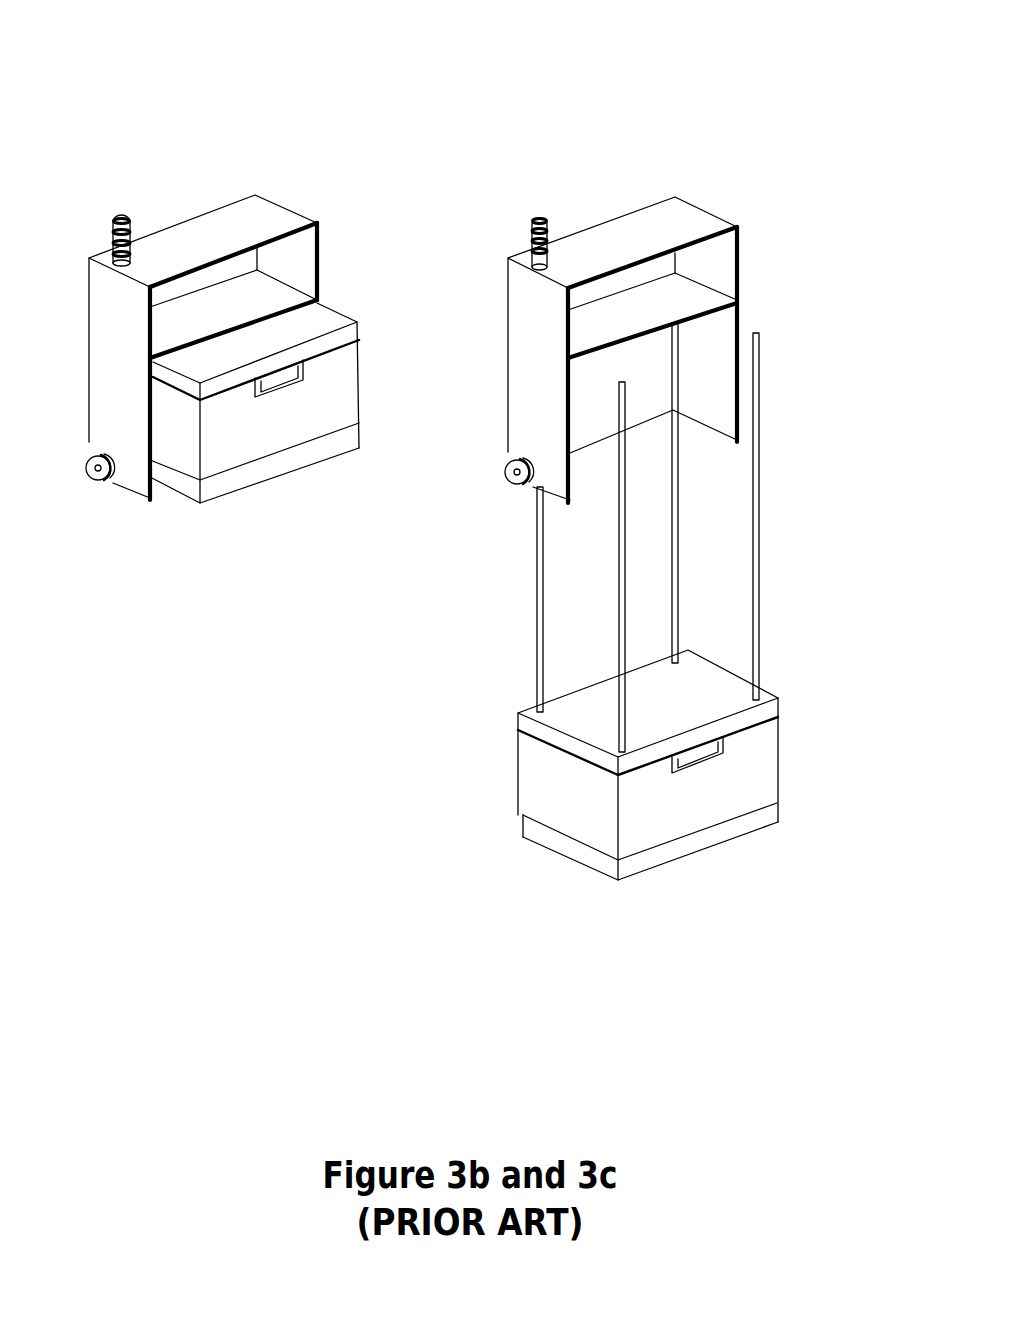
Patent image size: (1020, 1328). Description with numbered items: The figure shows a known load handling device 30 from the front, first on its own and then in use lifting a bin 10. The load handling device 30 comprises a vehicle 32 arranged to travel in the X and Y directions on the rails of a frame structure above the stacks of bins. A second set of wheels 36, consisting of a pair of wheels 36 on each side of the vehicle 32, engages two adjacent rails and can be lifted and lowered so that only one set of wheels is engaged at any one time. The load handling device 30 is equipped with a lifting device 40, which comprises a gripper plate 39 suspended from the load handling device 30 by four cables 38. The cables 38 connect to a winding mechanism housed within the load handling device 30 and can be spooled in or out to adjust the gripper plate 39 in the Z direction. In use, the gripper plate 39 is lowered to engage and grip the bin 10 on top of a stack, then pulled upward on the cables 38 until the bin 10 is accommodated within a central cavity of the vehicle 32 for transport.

In FIG. 3B, the bin 10 is at (243, 427).
In FIG. 3C, the bin 10 is at (715, 802).
In FIG. 3B, the load handling device 30 is at (277, 152).
In FIG. 3C, the load handling device 30 is at (679, 338).
In FIG. 3C, the vehicle 32 is at (688, 222).
In FIG. 3B, the second set of wheels 36 is at (100, 480).
In FIG. 3C, the second set of wheels 36 is at (513, 483).
In FIG. 3C, the cables 38 is at (760, 507).
In FIG. 3C, the gripper plate 39 is at (715, 690).
In FIG. 3C, the lifting device 40 is at (612, 374).